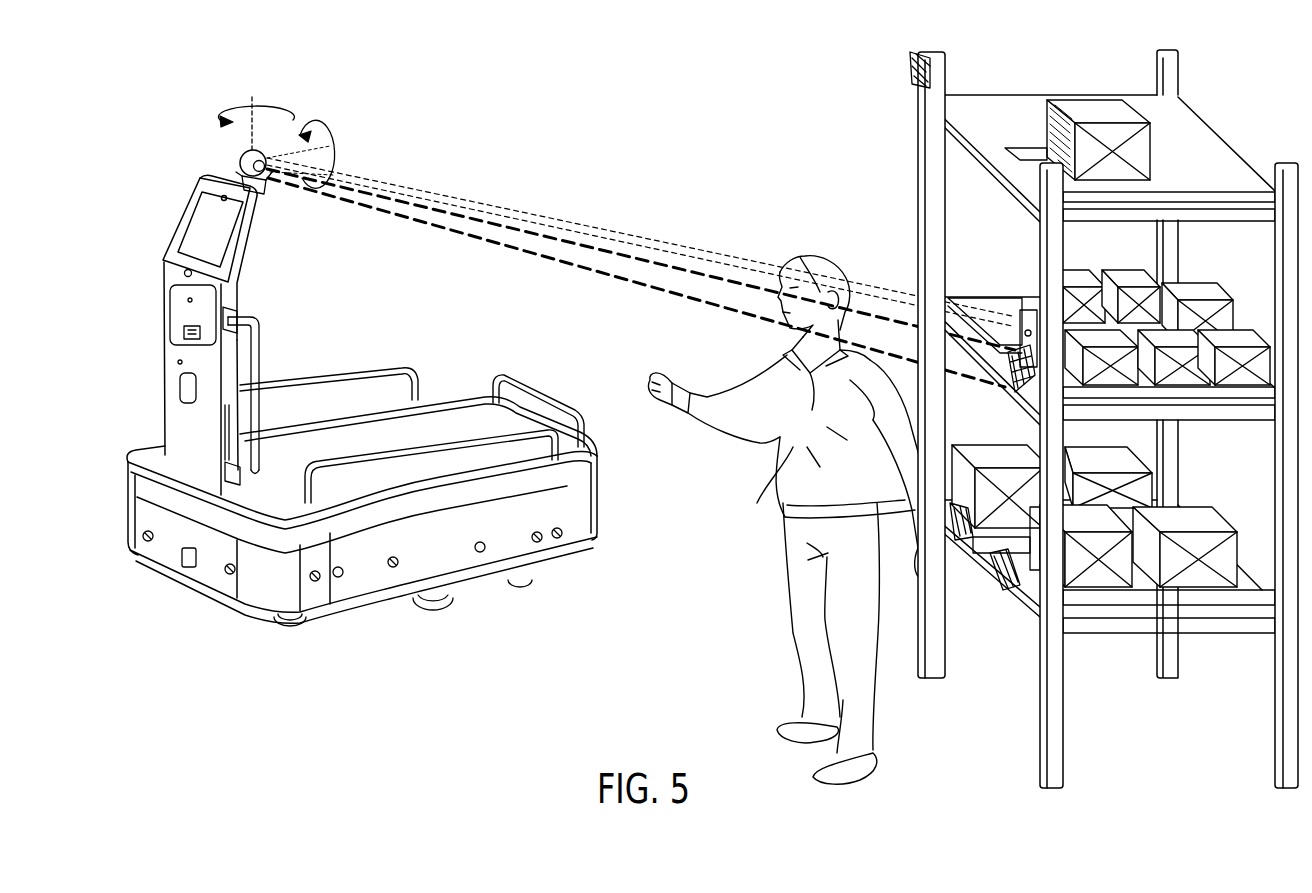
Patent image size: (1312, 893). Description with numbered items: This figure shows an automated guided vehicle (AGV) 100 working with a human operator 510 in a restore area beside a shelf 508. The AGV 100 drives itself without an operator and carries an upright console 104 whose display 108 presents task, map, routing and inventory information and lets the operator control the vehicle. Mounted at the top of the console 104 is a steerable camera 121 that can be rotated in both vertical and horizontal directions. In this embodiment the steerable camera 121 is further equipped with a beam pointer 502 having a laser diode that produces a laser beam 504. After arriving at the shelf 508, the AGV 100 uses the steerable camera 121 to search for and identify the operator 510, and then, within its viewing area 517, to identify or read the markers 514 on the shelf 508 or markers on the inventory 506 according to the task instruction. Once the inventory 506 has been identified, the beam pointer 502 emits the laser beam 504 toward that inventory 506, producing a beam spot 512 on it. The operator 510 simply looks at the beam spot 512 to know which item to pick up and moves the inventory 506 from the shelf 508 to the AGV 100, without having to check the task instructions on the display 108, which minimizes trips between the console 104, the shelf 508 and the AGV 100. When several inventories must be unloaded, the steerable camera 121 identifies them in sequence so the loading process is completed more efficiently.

The automated guided vehicle 100 is at (423, 349).
The console 104 is at (272, 318).
The display 108 is at (190, 238).
The steerable camera 121 is at (241, 152).
The beam pointer 502 is at (264, 151).
The laser beam 504 is at (482, 200).
The inventory 506 is at (1020, 328).
The shelf 508 is at (1180, 70).
The operator 510 is at (770, 488).
The beam spot 512 is at (1008, 333).
The marker 514 is at (912, 68).
The viewing area 517 is at (628, 285).